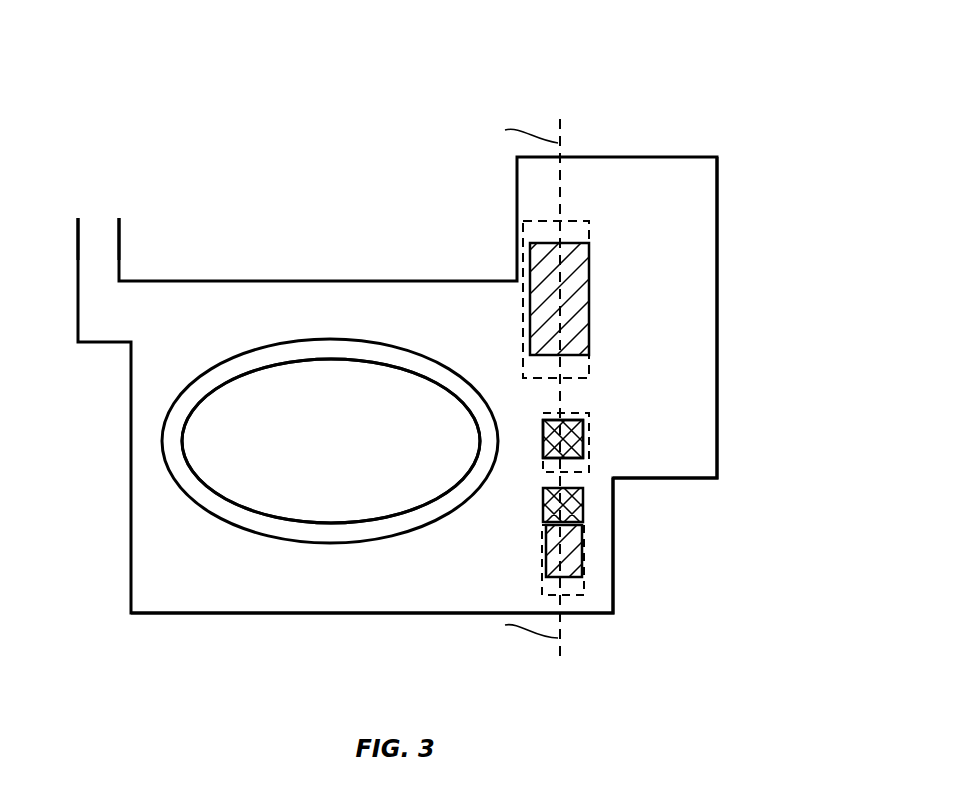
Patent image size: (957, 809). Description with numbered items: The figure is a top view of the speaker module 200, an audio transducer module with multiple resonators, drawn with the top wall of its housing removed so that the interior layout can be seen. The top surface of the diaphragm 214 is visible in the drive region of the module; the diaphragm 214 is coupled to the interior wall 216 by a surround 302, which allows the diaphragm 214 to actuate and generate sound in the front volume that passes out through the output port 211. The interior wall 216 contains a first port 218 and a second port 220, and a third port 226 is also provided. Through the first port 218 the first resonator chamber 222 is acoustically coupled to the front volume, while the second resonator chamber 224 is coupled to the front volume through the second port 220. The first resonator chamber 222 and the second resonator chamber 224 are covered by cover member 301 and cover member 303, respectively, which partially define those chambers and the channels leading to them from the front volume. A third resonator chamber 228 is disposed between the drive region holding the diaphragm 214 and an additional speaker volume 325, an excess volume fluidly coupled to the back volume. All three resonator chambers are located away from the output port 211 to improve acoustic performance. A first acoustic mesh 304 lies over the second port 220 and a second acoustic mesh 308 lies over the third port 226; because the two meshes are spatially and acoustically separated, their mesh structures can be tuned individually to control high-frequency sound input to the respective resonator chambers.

The speaker module 200 is at (441, 86).
The output port 211 is at (104, 210).
The diaphragm 214 is at (331, 441).
The interior wall 216 is at (149, 378).
The first port 218 is at (510, 353).
The second port 220 is at (577, 511).
The first resonator chamber 222 is at (588, 236).
The second resonator chamber 224 is at (578, 587).
The third port 226 is at (583, 447).
The third resonator chamber 228 is at (578, 466).
The cover member 301 is at (584, 316).
The surround 302 is at (182, 443).
The cover member 303 is at (551, 556).
The first acoustic mesh 304 is at (543, 513).
The second acoustic mesh 308 is at (577, 430).
The additional speaker volume 325 is at (684, 450).